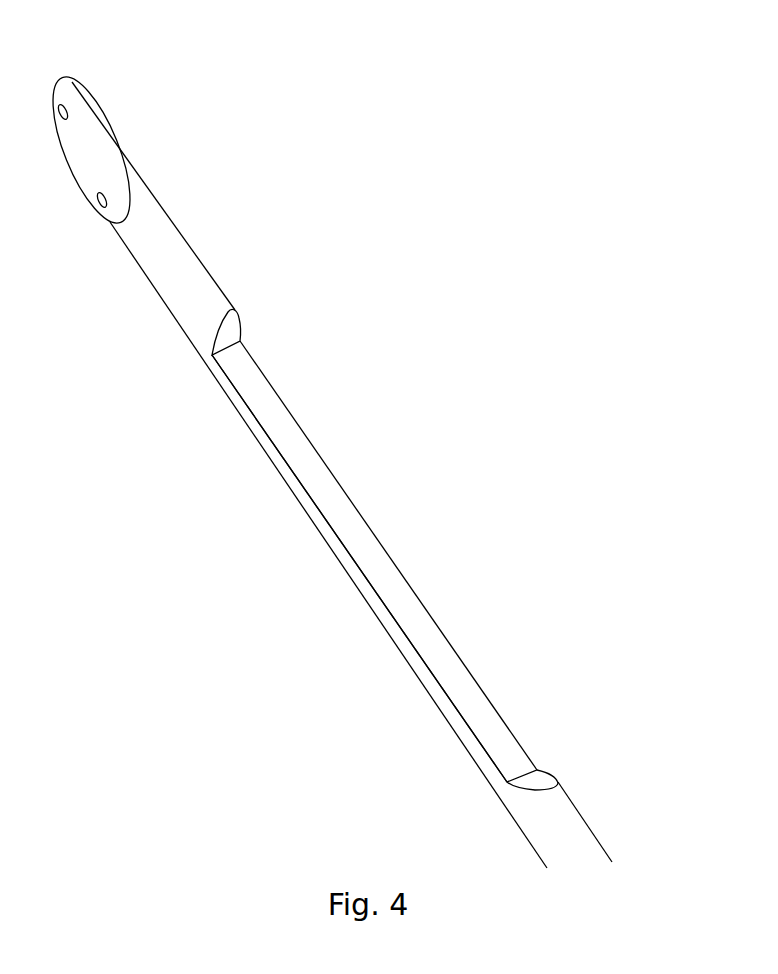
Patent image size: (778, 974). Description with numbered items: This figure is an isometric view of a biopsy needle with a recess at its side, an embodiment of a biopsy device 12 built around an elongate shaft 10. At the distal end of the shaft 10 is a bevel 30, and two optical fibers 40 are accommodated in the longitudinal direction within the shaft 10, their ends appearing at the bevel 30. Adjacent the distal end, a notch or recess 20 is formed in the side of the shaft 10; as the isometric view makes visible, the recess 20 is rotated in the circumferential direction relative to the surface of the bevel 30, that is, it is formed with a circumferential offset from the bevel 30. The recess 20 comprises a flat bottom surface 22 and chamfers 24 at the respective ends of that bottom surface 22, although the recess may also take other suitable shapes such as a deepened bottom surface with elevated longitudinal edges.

The shaft 10 is at (188, 285).
The tube assembly 12 is at (208, 163).
The recess 20 is at (478, 600).
The flat bottom surface 22 is at (329, 493).
The chamfers 24 is at (233, 328).
The bevel 30 is at (98, 142).
The optical fibers 40 is at (58, 121).